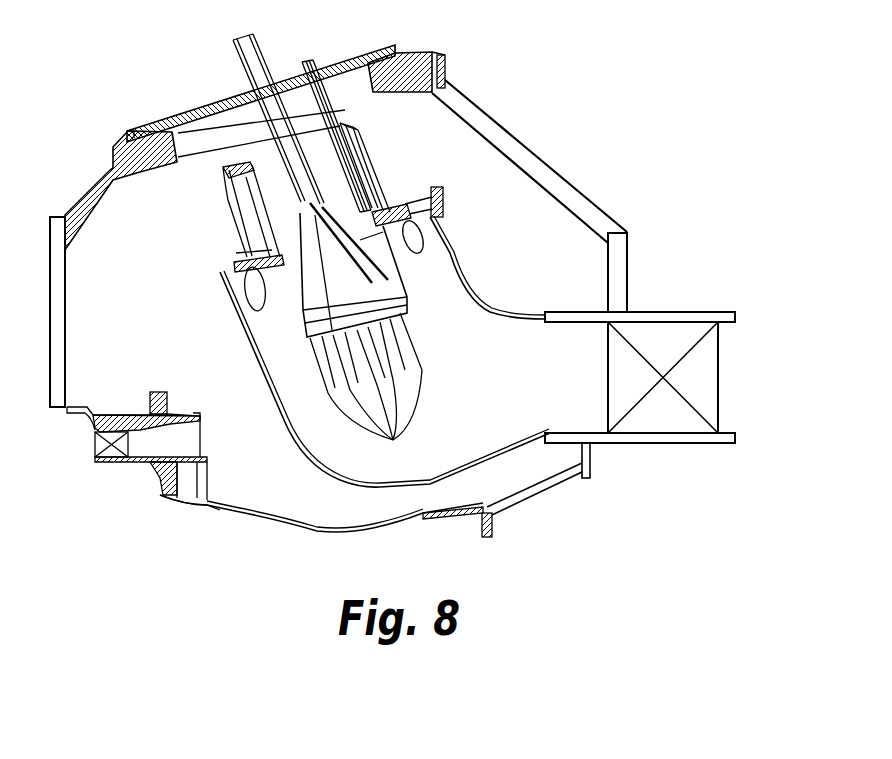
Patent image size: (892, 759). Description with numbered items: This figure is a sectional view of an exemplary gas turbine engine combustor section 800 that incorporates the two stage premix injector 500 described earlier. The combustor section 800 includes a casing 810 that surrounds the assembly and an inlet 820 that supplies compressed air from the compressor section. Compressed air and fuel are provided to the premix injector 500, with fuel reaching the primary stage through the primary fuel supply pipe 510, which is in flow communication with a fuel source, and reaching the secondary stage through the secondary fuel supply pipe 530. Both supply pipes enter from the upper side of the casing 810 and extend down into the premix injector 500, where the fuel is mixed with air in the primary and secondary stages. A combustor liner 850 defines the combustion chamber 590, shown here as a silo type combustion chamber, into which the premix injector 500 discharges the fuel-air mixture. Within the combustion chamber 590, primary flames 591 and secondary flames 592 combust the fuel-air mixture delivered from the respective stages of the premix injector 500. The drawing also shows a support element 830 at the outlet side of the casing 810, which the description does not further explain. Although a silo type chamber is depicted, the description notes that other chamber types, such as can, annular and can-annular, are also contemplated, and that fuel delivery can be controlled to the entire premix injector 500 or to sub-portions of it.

The gas turbine engine combustor section 800 is at (359, 212).
The casing 810 is at (550, 183).
The bearing / support 830 is at (692, 373).
The combustor liner 850 is at (466, 290).
The combustion chamber 590 is at (498, 378).
The inlet 820 is at (100, 445).
The premix injector 500 is at (285, 231).
The secondary fuel supply pipe 530 is at (258, 38).
The primary fuel supply pipe 510 is at (318, 60).
The primary flames 591 is at (262, 300).
The secondary flames 592 is at (394, 438).